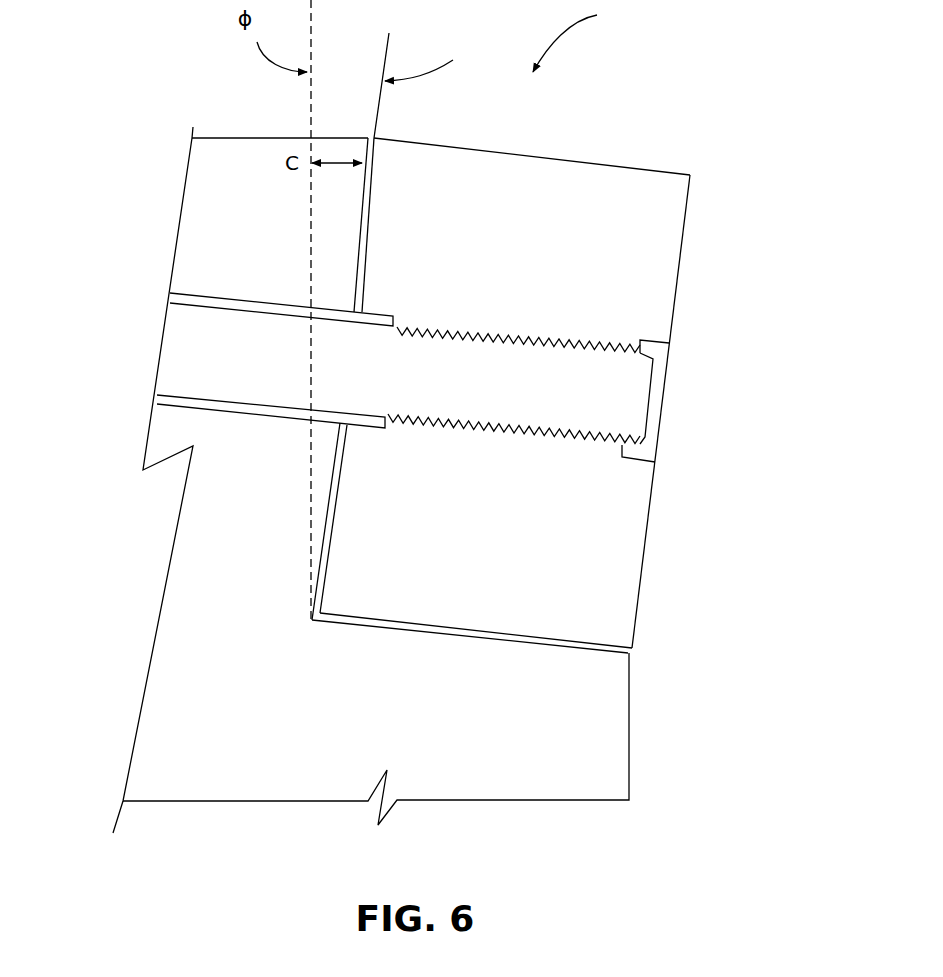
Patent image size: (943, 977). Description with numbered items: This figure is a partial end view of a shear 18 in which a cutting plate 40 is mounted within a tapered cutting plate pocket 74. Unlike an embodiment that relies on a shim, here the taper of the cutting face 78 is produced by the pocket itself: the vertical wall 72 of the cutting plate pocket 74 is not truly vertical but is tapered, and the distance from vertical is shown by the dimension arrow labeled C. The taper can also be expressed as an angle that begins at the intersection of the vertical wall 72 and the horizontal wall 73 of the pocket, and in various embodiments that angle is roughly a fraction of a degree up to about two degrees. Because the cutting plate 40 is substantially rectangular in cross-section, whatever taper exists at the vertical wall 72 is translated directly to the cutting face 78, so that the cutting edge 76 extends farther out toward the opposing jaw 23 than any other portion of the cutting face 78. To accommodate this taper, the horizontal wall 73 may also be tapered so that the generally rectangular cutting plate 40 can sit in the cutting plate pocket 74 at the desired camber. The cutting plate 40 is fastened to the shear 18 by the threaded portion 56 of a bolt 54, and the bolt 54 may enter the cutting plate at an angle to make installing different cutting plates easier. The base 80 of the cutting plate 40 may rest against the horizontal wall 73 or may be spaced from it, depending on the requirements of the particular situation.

The shear 18 is at (371, 480).
The opposing jaw 23 is at (210, 233).
The cutting plate 40 is at (540, 372).
The bolt 54 is at (405, 391).
The threaded portion 56 is at (474, 426).
The vertical wall 72 is at (367, 162).
The horizontal wall 73 is at (513, 643).
The cutting plate pocket 74 is at (507, 41).
The cutting edge 76 is at (665, 173).
The cutting face 78 is at (650, 222).
The base 80 is at (552, 638).